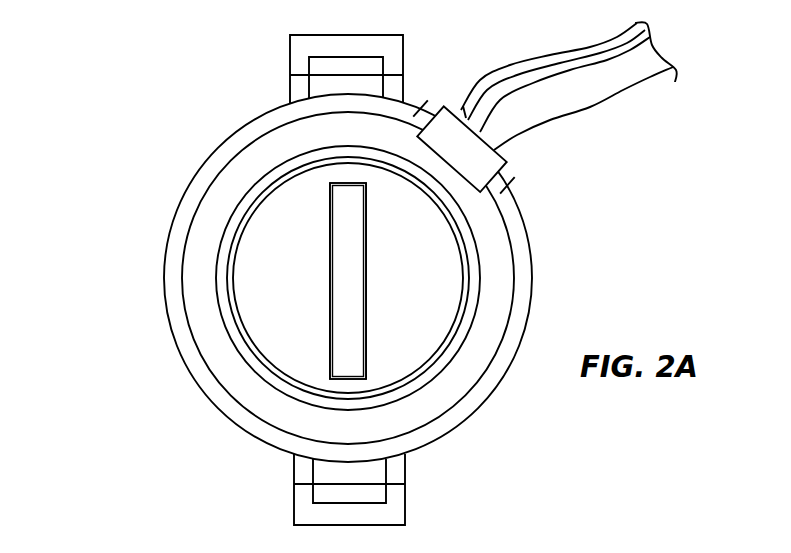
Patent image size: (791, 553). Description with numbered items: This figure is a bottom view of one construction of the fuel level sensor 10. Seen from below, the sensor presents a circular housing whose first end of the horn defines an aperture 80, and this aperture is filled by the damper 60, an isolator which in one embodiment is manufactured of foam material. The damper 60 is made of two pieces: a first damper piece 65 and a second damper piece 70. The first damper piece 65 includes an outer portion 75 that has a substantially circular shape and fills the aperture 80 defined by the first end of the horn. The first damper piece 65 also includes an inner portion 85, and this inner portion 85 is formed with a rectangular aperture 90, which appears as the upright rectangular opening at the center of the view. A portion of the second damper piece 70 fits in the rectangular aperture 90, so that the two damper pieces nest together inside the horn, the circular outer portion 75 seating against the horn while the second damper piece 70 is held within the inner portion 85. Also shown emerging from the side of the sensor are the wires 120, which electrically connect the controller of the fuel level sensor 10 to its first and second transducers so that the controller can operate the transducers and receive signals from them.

The fuel level sensor 10 is at (151, 57).
The damper 60 is at (236, 315).
The first damper piece 65 is at (403, 360).
The second damper piece 70 is at (349, 300).
The outer portion 75 is at (292, 362).
The aperture 80 is at (452, 352).
The inner portion 85 is at (330, 232).
The rectangular aperture 90 is at (366, 276).
The wires 120 is at (585, 55).